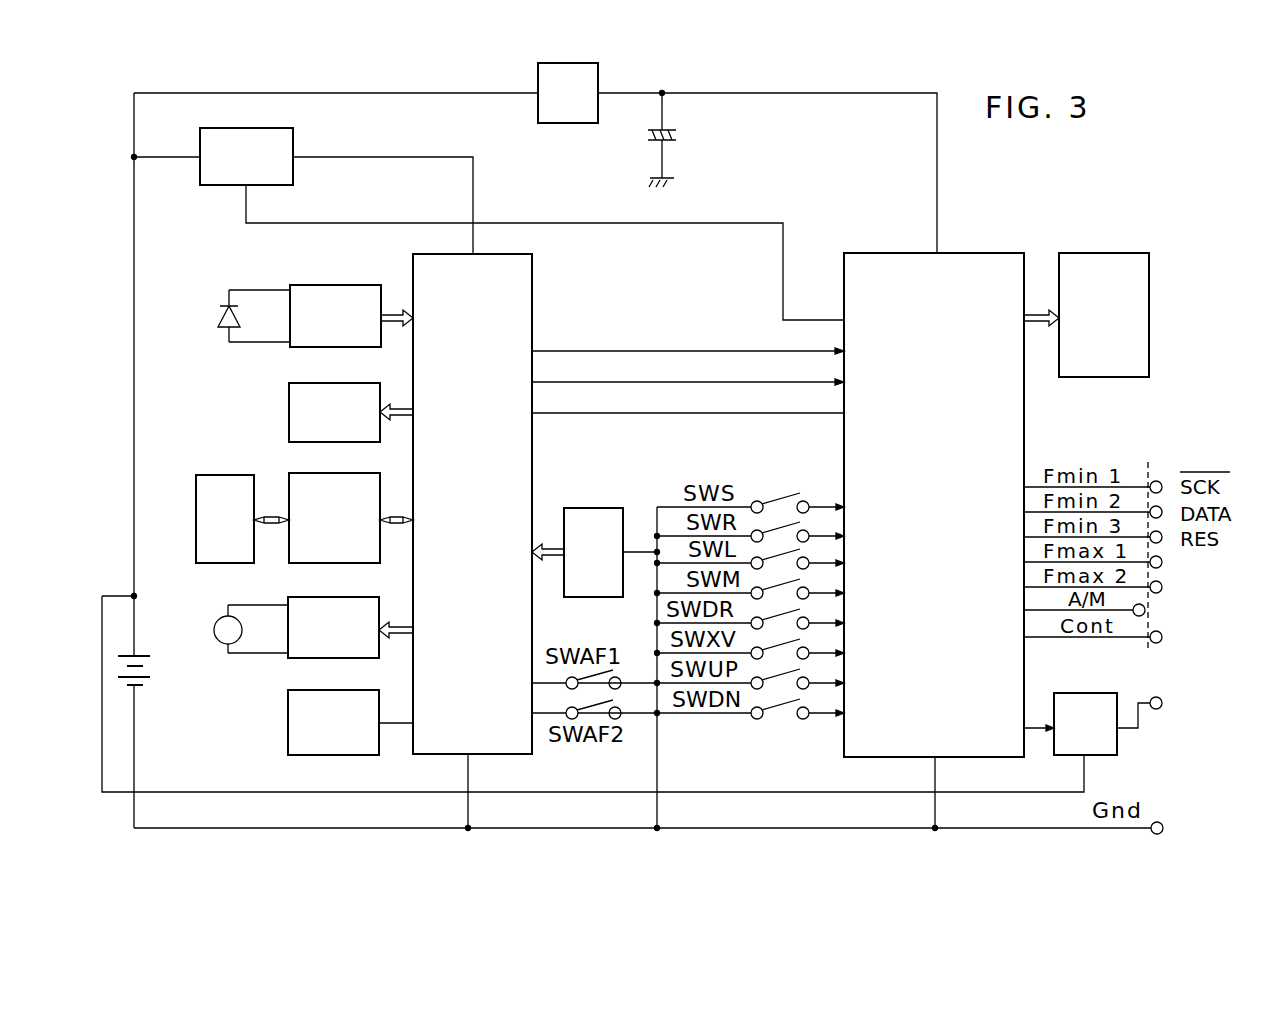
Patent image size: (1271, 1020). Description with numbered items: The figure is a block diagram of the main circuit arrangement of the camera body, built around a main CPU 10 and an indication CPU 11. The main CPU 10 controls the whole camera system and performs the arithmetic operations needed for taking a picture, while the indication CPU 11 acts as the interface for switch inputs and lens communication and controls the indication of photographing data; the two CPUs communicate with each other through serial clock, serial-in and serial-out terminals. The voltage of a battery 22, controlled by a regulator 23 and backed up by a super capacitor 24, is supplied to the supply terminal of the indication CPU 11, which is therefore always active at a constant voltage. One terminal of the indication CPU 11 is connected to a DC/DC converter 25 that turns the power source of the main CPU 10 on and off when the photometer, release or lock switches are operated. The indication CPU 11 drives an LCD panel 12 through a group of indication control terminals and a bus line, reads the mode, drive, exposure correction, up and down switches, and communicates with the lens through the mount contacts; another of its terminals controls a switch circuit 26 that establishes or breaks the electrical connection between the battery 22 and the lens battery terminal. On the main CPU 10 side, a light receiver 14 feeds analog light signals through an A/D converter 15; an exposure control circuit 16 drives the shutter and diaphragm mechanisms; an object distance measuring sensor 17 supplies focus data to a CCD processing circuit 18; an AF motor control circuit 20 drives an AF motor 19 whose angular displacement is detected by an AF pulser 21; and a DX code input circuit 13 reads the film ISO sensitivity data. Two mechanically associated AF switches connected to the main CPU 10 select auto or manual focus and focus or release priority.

The main CPU 10 is at (532, 285).
The indication CPU 11 is at (985, 247).
The LCD panel 12 is at (1098, 247).
The DX code input circuit 13 is at (590, 508).
The light receiver 14 is at (217, 312).
The A/D converter 15 is at (313, 285).
The exposure control circuit 16 is at (289, 395).
The automatic focusing CCD object distance measuring sensor 17 is at (228, 475).
The CCD processing circuit 18 is at (335, 473).
The AF motor 19 is at (213, 633).
The AF motor control circuit 20 is at (350, 597).
The AF pulser 21 is at (287, 725).
The battery 22 is at (150, 672).
The regulator 23 is at (598, 88).
The super capacitor 24 is at (676, 135).
The DC/DC converter 25 is at (293, 135).
The switch circuit 26 is at (1100, 755).